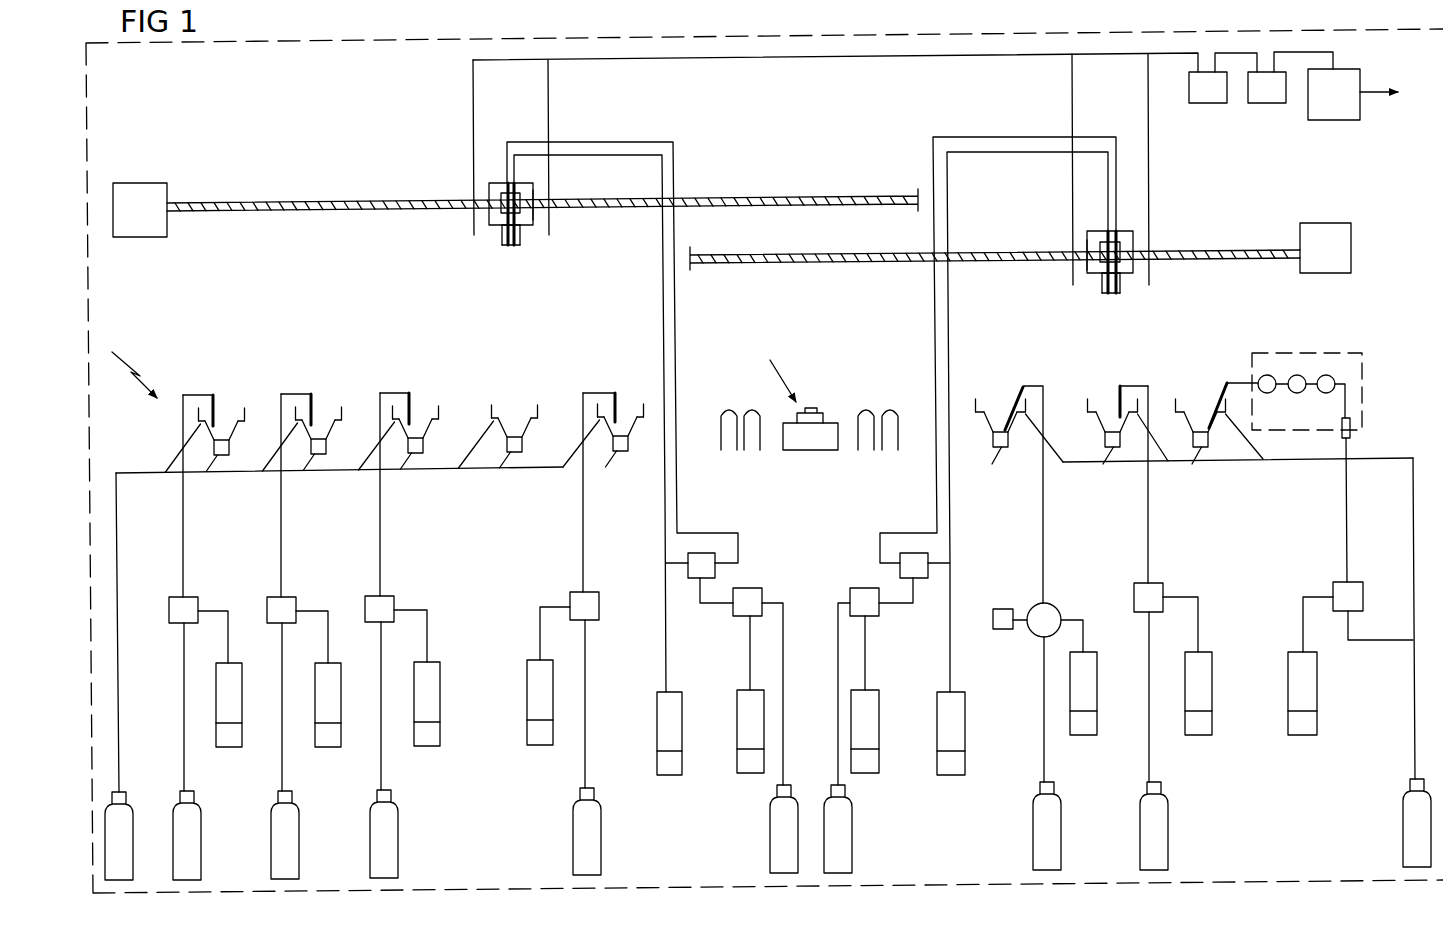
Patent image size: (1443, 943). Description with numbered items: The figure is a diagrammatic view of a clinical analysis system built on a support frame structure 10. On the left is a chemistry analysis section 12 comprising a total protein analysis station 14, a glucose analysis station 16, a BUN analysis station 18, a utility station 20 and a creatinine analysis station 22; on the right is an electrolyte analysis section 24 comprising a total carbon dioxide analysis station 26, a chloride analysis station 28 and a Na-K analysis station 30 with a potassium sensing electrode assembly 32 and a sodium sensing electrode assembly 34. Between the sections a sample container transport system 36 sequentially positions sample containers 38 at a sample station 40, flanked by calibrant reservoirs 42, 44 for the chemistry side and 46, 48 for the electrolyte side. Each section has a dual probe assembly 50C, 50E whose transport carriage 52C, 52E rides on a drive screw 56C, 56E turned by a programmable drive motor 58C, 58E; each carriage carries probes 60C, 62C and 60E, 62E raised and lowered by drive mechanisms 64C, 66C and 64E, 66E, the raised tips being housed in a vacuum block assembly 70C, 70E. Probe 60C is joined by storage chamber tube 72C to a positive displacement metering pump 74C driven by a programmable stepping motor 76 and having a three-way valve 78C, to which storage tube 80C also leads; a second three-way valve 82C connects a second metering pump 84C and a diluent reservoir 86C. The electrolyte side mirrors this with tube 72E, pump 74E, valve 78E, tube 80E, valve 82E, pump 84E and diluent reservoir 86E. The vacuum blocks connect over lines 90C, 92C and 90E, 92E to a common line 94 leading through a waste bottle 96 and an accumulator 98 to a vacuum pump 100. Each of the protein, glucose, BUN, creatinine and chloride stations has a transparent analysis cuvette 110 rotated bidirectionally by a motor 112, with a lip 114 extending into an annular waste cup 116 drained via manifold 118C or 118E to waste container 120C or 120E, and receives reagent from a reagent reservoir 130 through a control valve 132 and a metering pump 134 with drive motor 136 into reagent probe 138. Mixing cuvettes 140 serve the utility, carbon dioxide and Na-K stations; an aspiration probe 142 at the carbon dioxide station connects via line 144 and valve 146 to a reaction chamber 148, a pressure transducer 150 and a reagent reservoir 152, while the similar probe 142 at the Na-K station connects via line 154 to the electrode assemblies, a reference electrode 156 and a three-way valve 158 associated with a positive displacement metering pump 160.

The support frame structure 10 is at (937, 887).
The chemistry analysis section 12 is at (126, 364).
The total protein analysis station 14 is at (228, 394).
The glucose analysis station 16 is at (325, 393).
The BUN analysis station 18 is at (422, 392).
The utility station 20 is at (515, 392).
The creatinine analysis station 22 is at (625, 390).
The electrolyte analysis section 24 is at (1378, 357).
The total carbon dioxide analysis station 26 is at (993, 392).
The chloride analysis station 28 is at (1100, 392).
The Na-K analysis station 30 is at (1197, 392).
The potassium sensing electrode assembly 32 is at (1267, 375).
The sodium sensing electrode assembly 34 is at (1300, 375).
The sample container transport system 36 is at (808, 452).
The sample container 38 is at (818, 411).
The sample station 40 is at (775, 370).
The calibrant reservoir 42 is at (725, 452).
The calibrant reservoir 44 is at (754, 452).
The calibrant reservoir 46 is at (865, 452).
The calibrant reservoir 48 is at (891, 452).
The dual probe assembly 50C is at (486, 218).
The transport carriage 52C is at (533, 212).
The drive screw 56C is at (218, 203).
The programmable drive motor 58C is at (150, 183).
The probe 60C is at (520, 235).
The probe 62C is at (502, 235).
The drive mechanism 64C is at (520, 195).
The drive mechanism 66C is at (501, 198).
The vacuum block assembly 70C is at (511, 246).
The storage chamber tube 72C is at (662, 318).
The positive displacement metering pump 74C is at (657, 692).
The programmable stepping motor 76 is at (668, 775).
The three-way valve 78C is at (698, 580).
The storage tube 80C is at (675, 318).
The second three-way valve 82C is at (758, 588).
The second positive displacement metering pump 84C is at (737, 700).
The diluent reservoir 86C is at (758, 829).
The line 90C is at (473, 70).
The line 92C is at (548, 72).
The common line 94 is at (808, 59).
The waste bottle 96 is at (1212, 103).
The accumulator 98 is at (1268, 103).
The vacuum pump 100 is at (1338, 120).
The dual probe assembly 50E is at (1140, 265).
The transport carriage 52E is at (1087, 262).
The drive screw 56E is at (1250, 250).
The programmable drive motor 58E is at (1340, 240).
The probe 60E is at (1102, 283).
The probe 62E is at (1120, 283).
The drive mechanism 64E is at (1100, 247).
The drive mechanism 66E is at (1120, 245).
The vacuum block assembly 70E is at (1111, 294).
The storage chamber tube 72E is at (947, 320).
The positive displacement metering pump 74E is at (965, 700).
The three-way valve 78E is at (922, 580).
The storage tube 80E is at (935, 318).
The second three-way valve 82E is at (868, 588).
The second positive displacement metering pump 84E is at (879, 700).
The diluent reservoir 86E is at (853, 840).
The line 90E is at (1072, 64).
The line 92E is at (1148, 62).
The analysis cuvette 110 is at (229, 448).
The motor 112 is at (699, 473).
The lip 114 is at (250, 405).
The annular waste cup 116 is at (236, 432).
The manifold 118C is at (528, 468).
The manifold 118E is at (1250, 460).
The waste container 120C is at (133, 840).
The waste container 120E is at (1403, 838).
The reagent reservoir 130 is at (201, 830).
The control valve 132 is at (196, 597).
The positive displacement metering pump 134 is at (242, 675).
The drive motor 136 is at (228, 747).
The reagent probe 138 is at (212, 400).
The mixing cuvette 140 is at (522, 446).
The aspiration probe 142 is at (1012, 400).
The line 144 is at (1044, 545).
The valve 146 is at (1055, 606).
The reaction chamber 148 is at (1097, 668).
The pressure transducer 150 is at (1000, 609).
The reagent reservoir 152 is at (1061, 825).
The line 154 is at (1240, 382).
The reference electrode 156 is at (1333, 376).
The three-way valve 158 is at (1340, 582).
The positive displacement metering pump 160 is at (1317, 670).